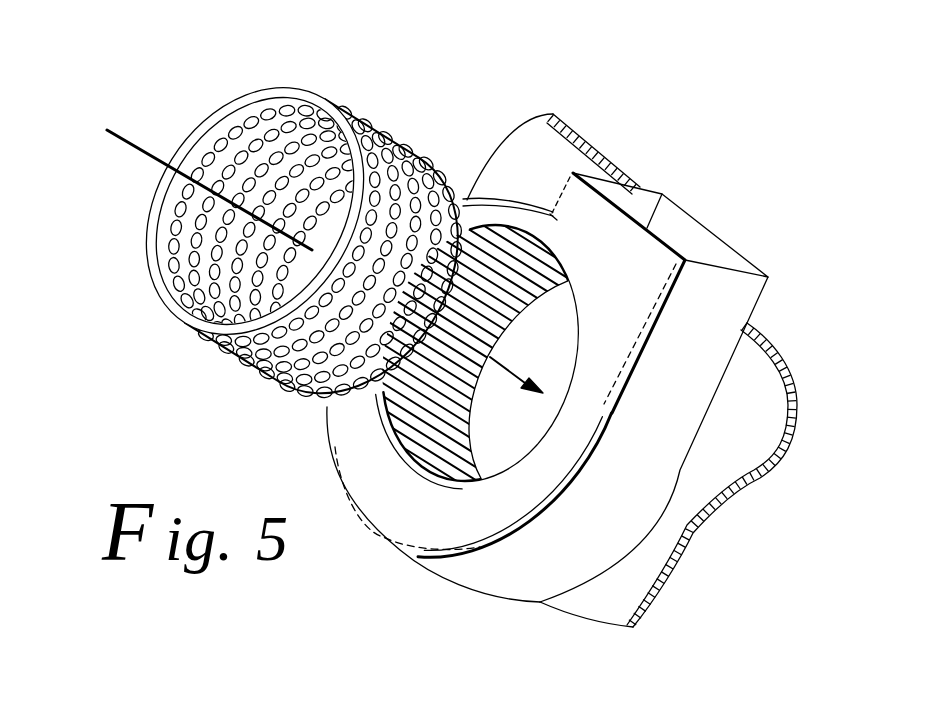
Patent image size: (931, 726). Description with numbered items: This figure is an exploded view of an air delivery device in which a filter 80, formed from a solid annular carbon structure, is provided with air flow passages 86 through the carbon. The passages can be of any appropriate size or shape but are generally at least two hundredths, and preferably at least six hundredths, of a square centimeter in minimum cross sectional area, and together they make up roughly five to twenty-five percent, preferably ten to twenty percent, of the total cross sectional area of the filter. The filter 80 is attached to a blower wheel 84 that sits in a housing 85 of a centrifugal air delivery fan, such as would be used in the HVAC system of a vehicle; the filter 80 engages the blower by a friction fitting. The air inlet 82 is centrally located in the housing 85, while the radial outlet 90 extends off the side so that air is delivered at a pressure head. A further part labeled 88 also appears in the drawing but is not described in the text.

The filter 80 is at (271, 275).
The air inlet 82 is at (130, 150).
The blower wheel 84 is at (487, 290).
The housing 85 is at (483, 214).
The air flow passage 86 is at (297, 402).
The bore inner surface 88 is at (447, 434).
The radial outlet 90 is at (690, 233).